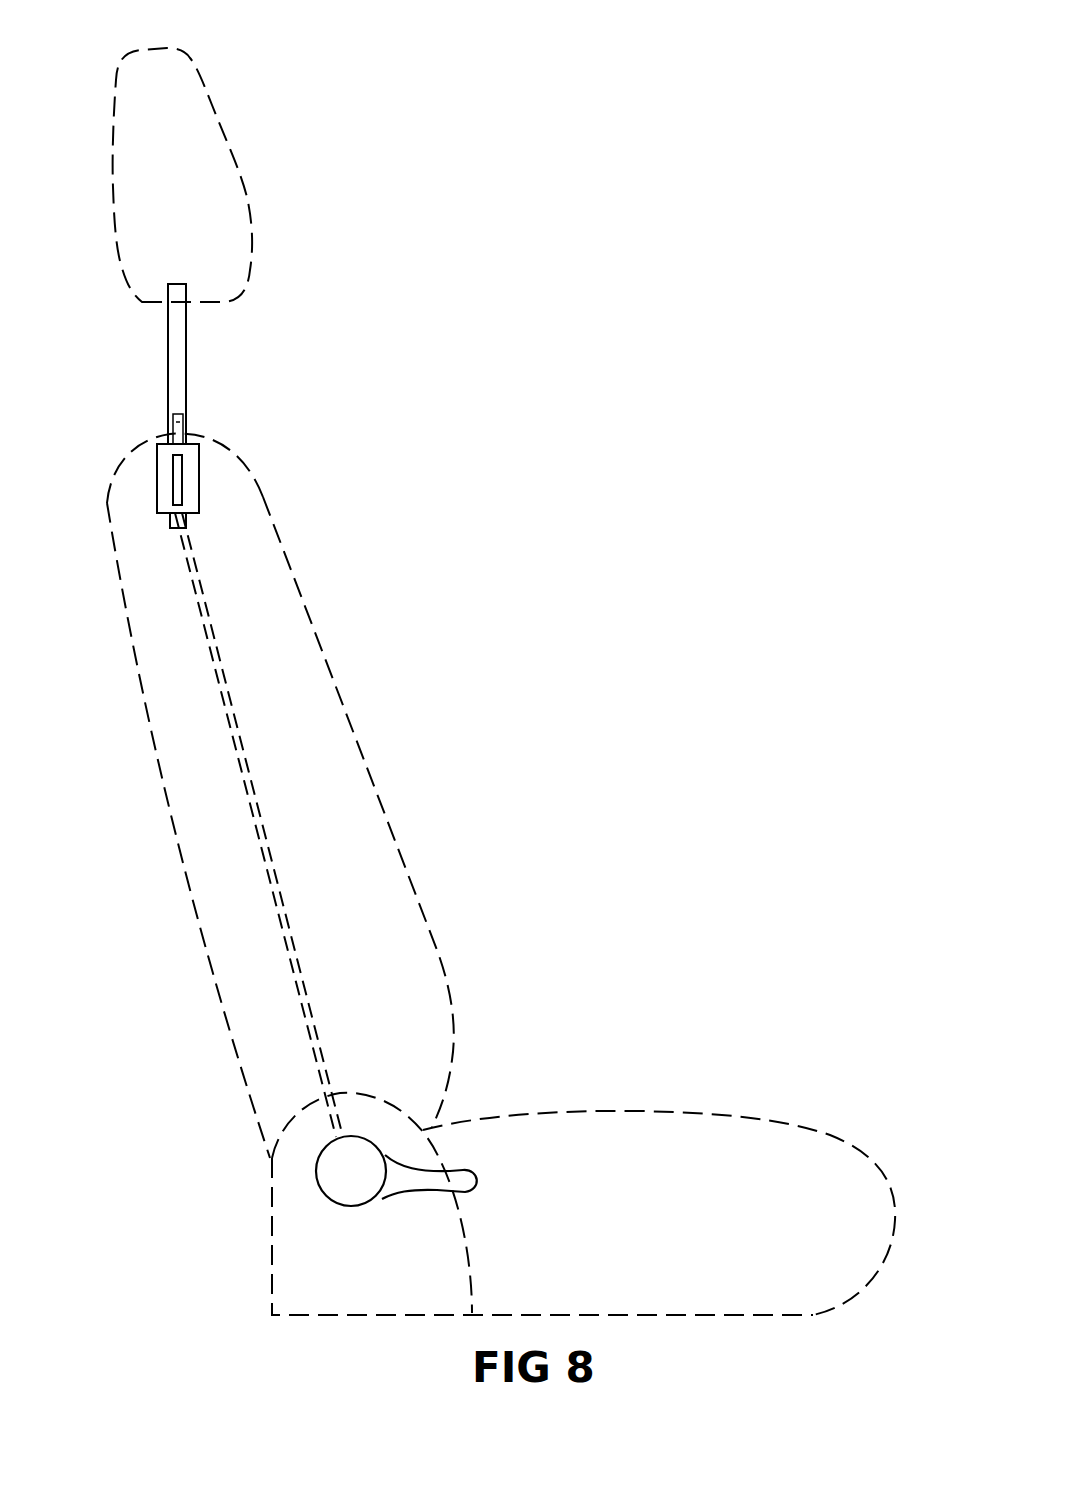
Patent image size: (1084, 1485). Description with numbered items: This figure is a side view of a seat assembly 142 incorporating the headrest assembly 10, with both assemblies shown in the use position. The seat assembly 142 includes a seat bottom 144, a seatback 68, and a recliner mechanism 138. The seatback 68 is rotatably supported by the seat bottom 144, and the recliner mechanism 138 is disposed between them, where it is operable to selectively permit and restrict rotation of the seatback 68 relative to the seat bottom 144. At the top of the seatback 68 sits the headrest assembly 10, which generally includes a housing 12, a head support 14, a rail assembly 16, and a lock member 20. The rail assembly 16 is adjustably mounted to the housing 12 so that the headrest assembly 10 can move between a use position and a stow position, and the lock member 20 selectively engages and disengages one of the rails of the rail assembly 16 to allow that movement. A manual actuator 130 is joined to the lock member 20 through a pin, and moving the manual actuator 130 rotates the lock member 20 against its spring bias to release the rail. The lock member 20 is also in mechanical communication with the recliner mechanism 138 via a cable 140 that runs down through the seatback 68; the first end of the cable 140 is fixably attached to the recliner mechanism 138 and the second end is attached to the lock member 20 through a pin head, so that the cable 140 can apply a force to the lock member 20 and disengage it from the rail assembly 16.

The headrest assembly 10 is at (502, 288).
The housing 12 is at (202, 472).
The head support 14 is at (187, 62).
The rail assembly 16 is at (188, 362).
The lock member 20 is at (195, 498).
The seatback 68 is at (358, 748).
The manual actuator 130 is at (180, 418).
The recliner mechanism 138 is at (377, 1148).
The cable 140 is at (282, 915).
The seat assembly 142 is at (717, 497).
The seat bottom 144 is at (717, 1131).